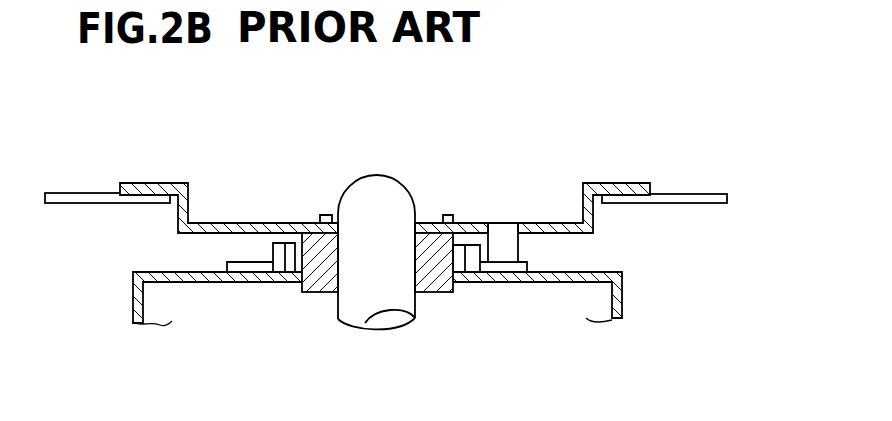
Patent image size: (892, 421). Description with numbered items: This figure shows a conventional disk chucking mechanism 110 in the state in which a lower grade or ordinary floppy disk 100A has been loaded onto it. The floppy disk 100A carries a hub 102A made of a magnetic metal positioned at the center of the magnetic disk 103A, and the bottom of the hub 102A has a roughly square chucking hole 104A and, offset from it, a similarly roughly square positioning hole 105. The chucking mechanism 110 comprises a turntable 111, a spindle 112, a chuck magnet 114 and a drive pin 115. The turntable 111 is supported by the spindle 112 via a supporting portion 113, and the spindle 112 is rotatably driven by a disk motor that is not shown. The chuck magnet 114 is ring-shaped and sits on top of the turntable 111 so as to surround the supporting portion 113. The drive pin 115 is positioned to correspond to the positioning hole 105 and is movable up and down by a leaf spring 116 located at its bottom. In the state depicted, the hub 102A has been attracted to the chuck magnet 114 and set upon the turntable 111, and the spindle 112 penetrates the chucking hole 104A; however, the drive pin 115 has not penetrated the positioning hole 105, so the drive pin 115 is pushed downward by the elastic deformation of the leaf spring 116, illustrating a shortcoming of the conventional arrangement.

The lower grade or ordinary floppy disk 100A is at (640, 167).
The hub 102A is at (550, 223).
The magnetic disk 103A is at (687, 194).
The chucking hole 104A is at (440, 220).
The positioning hole 105 is at (507, 237).
The disk chucking mechanism 110 is at (627, 278).
The turntable 111 is at (598, 271).
The spindle 112 is at (377, 187).
The supporting portion 113 is at (319, 222).
The chuck magnet 114 is at (302, 242).
The drive pin 115 is at (508, 245).
The leaf spring 116 is at (512, 265).